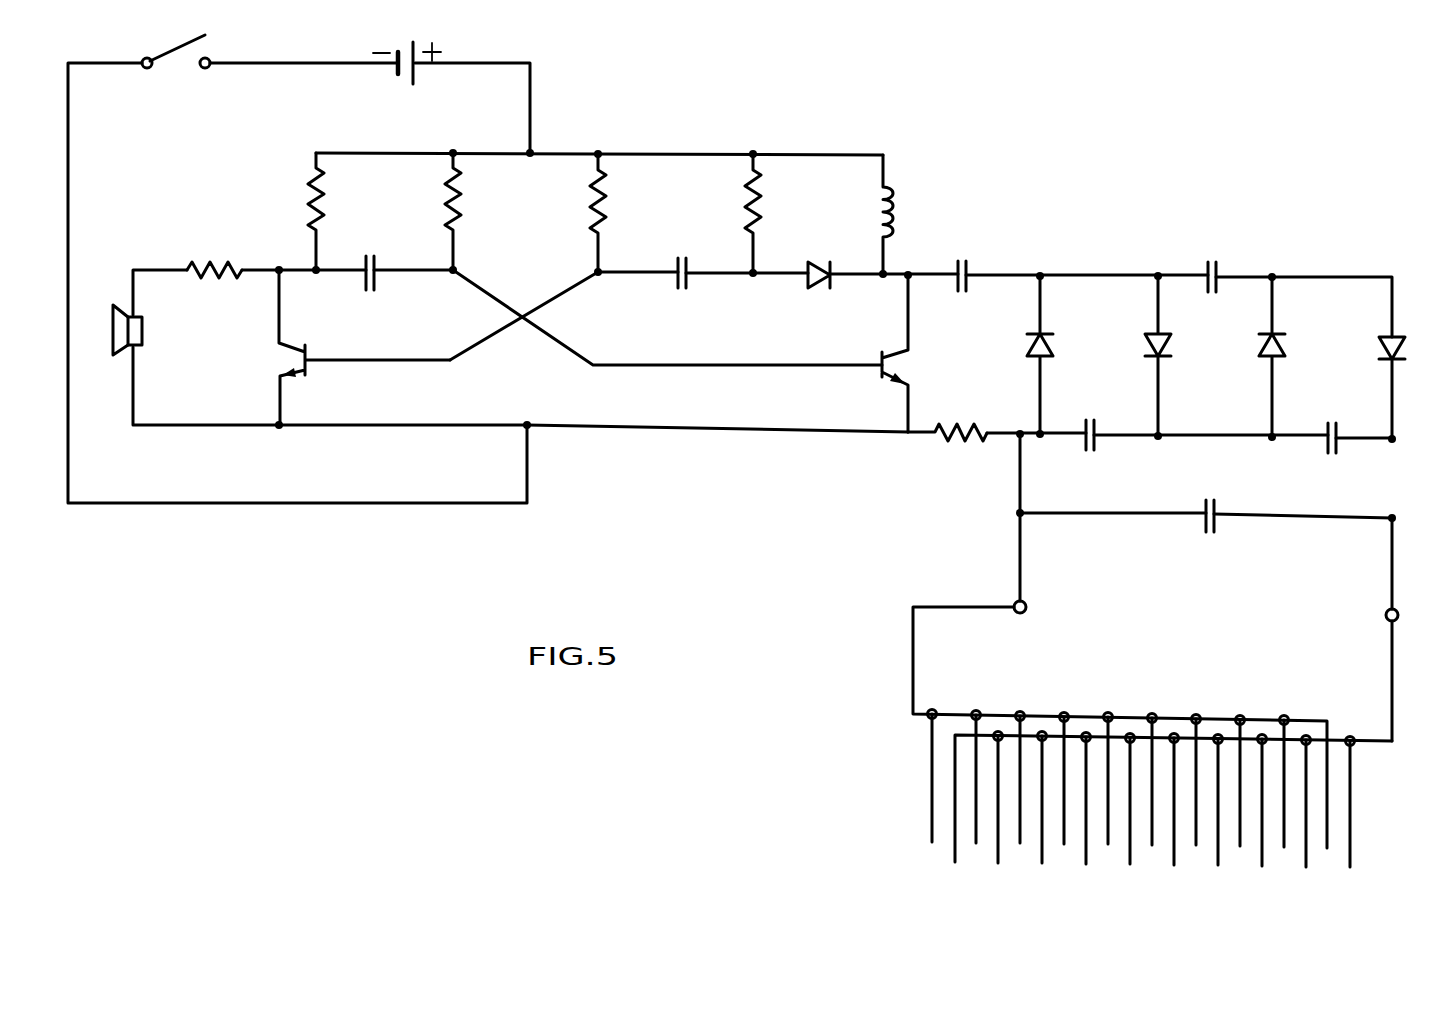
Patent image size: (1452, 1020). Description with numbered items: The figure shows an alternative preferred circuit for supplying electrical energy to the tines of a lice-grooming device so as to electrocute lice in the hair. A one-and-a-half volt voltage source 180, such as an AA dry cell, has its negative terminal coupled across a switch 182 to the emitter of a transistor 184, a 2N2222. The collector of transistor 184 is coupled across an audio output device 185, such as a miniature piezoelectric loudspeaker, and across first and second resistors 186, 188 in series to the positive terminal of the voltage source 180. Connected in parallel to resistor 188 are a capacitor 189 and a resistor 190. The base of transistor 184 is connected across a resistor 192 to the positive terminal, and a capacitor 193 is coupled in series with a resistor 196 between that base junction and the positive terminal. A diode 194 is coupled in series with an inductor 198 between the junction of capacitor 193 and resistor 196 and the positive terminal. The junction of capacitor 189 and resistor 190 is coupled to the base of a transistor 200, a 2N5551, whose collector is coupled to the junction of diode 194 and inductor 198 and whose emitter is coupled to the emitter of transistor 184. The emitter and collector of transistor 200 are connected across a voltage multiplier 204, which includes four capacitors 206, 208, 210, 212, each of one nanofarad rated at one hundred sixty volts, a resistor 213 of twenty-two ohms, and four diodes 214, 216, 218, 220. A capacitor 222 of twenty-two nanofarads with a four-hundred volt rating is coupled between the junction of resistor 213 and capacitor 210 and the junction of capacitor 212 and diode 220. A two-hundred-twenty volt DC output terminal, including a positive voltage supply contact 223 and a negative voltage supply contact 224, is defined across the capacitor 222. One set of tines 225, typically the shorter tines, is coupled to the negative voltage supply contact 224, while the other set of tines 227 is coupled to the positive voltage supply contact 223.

The voltage source 180 is at (411, 46).
The switch 182 is at (168, 54).
The transistor 184 is at (297, 374).
The audio output device 185 is at (112, 333).
The first resistor 186 is at (217, 262).
The second resistor 188 is at (313, 200).
The capacitor 189 is at (370, 286).
The resistor 190 is at (450, 200).
The resistor 192 is at (593, 208).
The capacitor 193 is at (660, 280).
The diode 194 is at (797, 277).
The resistor 196 is at (750, 213).
The inductor 198 is at (893, 200).
The transistor 200 is at (878, 378).
The voltage multiplier 204 is at (1328, 167).
The capacitor 206 is at (955, 283).
The capacitor 208 is at (1213, 267).
The capacitor 210 is at (1112, 441).
The capacitor 212 is at (1340, 432).
The resistor 213 is at (942, 440).
The diode 214 is at (1050, 334).
The diode 216 is at (1148, 340).
The diode 218 is at (1283, 353).
The diode 220 is at (1400, 340).
The capacitor 222 is at (1243, 519).
The positive voltage supply contact 223 is at (1368, 633).
The negative voltage supply contact 224 is at (1003, 595).
The set of tines 225 is at (1196, 846).
The set of tines 227 is at (998, 864).